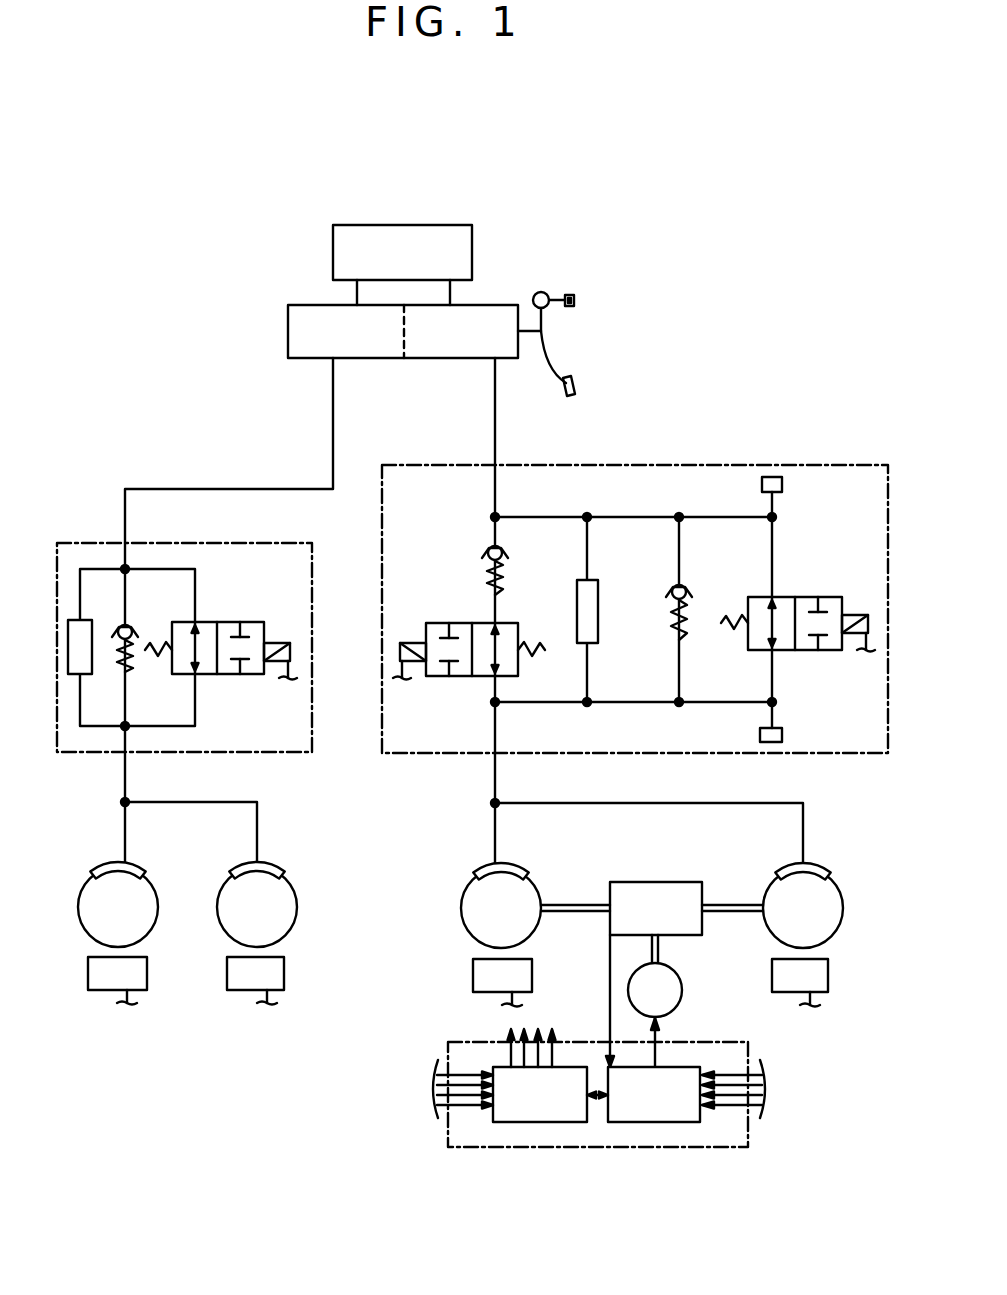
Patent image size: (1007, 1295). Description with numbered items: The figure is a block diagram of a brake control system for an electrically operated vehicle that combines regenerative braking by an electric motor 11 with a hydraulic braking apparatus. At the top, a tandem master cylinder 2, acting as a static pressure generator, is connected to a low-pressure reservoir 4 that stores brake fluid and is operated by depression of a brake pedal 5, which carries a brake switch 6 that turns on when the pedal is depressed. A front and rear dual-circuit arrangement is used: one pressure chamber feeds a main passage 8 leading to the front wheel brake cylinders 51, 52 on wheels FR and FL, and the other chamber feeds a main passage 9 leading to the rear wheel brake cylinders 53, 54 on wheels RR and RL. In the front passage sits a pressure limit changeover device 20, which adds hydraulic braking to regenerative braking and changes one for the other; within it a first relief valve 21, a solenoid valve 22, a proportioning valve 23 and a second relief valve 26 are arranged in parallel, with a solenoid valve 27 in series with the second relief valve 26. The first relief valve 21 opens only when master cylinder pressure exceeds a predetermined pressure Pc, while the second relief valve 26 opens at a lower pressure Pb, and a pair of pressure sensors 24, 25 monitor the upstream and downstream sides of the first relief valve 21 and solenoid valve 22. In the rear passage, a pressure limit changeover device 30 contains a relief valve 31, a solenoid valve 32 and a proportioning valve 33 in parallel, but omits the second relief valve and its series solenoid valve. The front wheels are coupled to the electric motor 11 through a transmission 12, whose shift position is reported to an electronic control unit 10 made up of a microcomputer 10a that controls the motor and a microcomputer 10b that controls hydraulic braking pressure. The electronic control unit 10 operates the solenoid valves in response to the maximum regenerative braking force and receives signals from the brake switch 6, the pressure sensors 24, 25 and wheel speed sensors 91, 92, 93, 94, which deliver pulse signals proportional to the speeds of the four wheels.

The master cylinder 2 is at (492, 305).
The low-pressure reservoir 4 is at (358, 225).
The brake pedal 5 is at (577, 380).
The brake switch 6 is at (576, 300).
The main passage 8 is at (495, 415).
The main passage 9 is at (333, 413).
The electronic control unit 10 is at (447, 1042).
The microcomputer 10a is at (686, 1091).
The microcomputer 10b is at (510, 1075).
The electric motor 11 is at (683, 985).
The transmission 12 is at (650, 882).
The pressure limit changeover device 20 is at (590, 462).
The first relief valve 21 is at (697, 606).
The solenoid valve 22 is at (800, 597).
The proportioning valve 23 is at (600, 606).
The pressure sensor 24 is at (782, 486).
The pressure sensor 25 is at (782, 736).
The second relief valve 26 is at (486, 550).
The solenoid valve 27 is at (465, 622).
The pressure limit changeover device 30 is at (150, 540).
The relief valve 31 is at (137, 631).
The solenoid valve 32 is at (222, 622).
The proportioning valve 33 is at (95, 632).
The wheel brake cylinder 51 is at (833, 870).
The wheel brake cylinder 52 is at (517, 870).
The wheel brake cylinder 53 is at (277, 870).
The wheel brake cylinder 54 is at (130, 870).
The wheel speed sensor 91 is at (800, 983).
The wheel speed sensor 92 is at (502, 983).
The wheel speed sensor 93 is at (255, 981).
The wheel speed sensor 94 is at (117, 981).